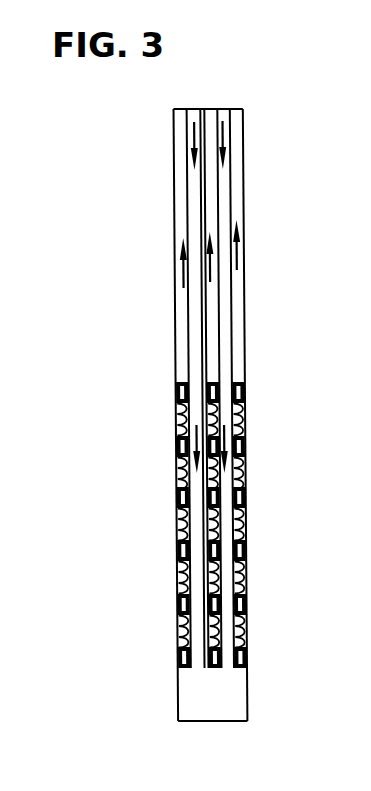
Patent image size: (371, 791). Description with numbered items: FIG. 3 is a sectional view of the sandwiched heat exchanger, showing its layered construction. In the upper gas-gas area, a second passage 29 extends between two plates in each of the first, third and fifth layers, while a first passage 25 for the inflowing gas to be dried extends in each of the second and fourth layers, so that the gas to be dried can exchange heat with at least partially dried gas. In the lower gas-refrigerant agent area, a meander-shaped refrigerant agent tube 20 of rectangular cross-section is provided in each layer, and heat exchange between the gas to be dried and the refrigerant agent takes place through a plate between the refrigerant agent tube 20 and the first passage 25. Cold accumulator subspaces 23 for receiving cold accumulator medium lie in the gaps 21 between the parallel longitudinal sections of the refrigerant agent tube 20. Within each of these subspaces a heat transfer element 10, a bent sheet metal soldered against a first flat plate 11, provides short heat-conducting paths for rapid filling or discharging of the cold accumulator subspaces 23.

The heat transfer element 10 is at (247, 575).
The first flat plate 11 is at (179, 631).
The refrigerant agent tube 20 is at (243, 443).
The gaps 21 is at (243, 517).
The cold accumulator subspaces 23 is at (177, 518).
The first passage 25 is at (225, 180).
The second passage 29 is at (240, 300).